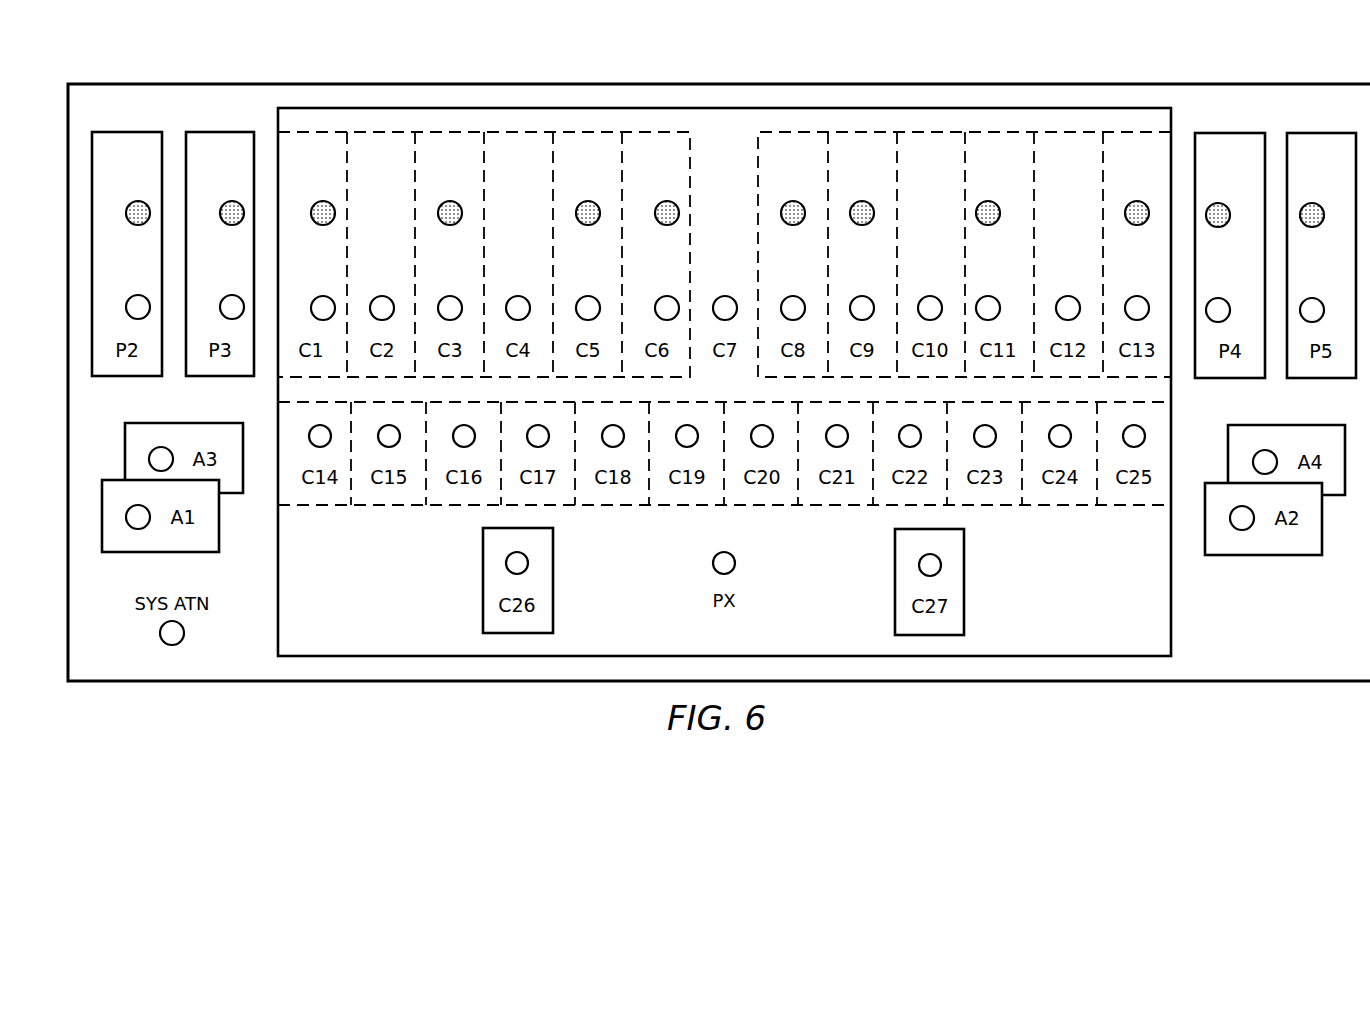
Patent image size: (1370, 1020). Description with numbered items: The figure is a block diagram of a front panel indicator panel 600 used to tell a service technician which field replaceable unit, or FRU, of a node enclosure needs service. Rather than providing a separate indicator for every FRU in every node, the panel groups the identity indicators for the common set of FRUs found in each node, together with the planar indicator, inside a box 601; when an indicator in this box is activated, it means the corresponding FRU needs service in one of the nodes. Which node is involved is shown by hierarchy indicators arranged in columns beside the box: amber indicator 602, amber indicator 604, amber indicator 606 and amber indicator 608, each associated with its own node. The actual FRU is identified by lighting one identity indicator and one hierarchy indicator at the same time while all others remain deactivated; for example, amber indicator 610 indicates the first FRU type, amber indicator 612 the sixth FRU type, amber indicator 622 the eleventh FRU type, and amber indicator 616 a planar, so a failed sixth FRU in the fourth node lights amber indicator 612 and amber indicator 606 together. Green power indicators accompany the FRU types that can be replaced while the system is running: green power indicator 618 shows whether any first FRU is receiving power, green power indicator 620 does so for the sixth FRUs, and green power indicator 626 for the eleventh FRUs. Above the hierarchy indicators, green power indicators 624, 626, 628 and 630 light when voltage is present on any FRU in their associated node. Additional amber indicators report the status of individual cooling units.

The front panel indicator panel 600 is at (491, 80).
The box 601 is at (1180, 594).
The amber indicator P2 602 is at (134, 295).
The amber indicator P3 604 is at (228, 295).
The amber indicator P4 606 is at (1223, 298).
The amber indicator P5 608 is at (1316, 298).
The amber indicator C1 610 is at (318, 296).
The amber indicator C6 612 is at (662, 296).
The amber indicator Px 616 is at (735, 566).
The green power indicator 618 is at (318, 201).
The green power indicator 620 is at (662, 201).
The amber indicator C11 622 is at (992, 296).
The green power indicator 624 is at (134, 201).
The green power indicator 626 is at (228, 201).
The green power indicator 628 is at (1223, 203).
The green power indicator 630 is at (1316, 203).